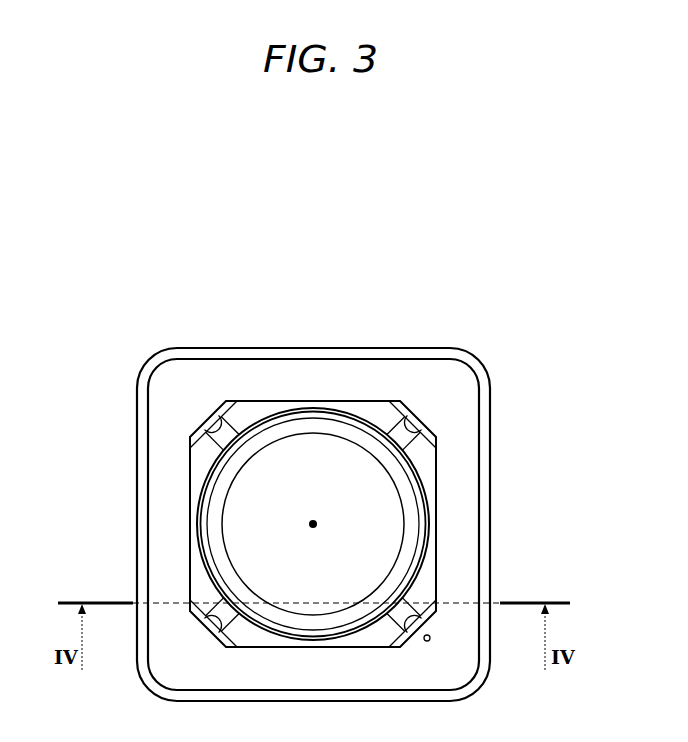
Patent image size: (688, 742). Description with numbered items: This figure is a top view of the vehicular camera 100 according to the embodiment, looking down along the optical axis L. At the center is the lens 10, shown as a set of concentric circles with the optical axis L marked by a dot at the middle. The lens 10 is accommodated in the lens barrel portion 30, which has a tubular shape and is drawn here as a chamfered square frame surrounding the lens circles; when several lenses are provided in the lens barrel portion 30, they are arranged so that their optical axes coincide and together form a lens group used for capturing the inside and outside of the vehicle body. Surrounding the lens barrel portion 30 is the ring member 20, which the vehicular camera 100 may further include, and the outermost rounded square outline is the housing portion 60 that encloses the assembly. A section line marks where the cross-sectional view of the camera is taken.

The vehicular camera 100 is at (539, 268).
The lens 10 is at (288, 472).
The ring member 20 is at (465, 422).
The lens barrel portion 30 is at (340, 402).
The housing portion 60 is at (137, 418).